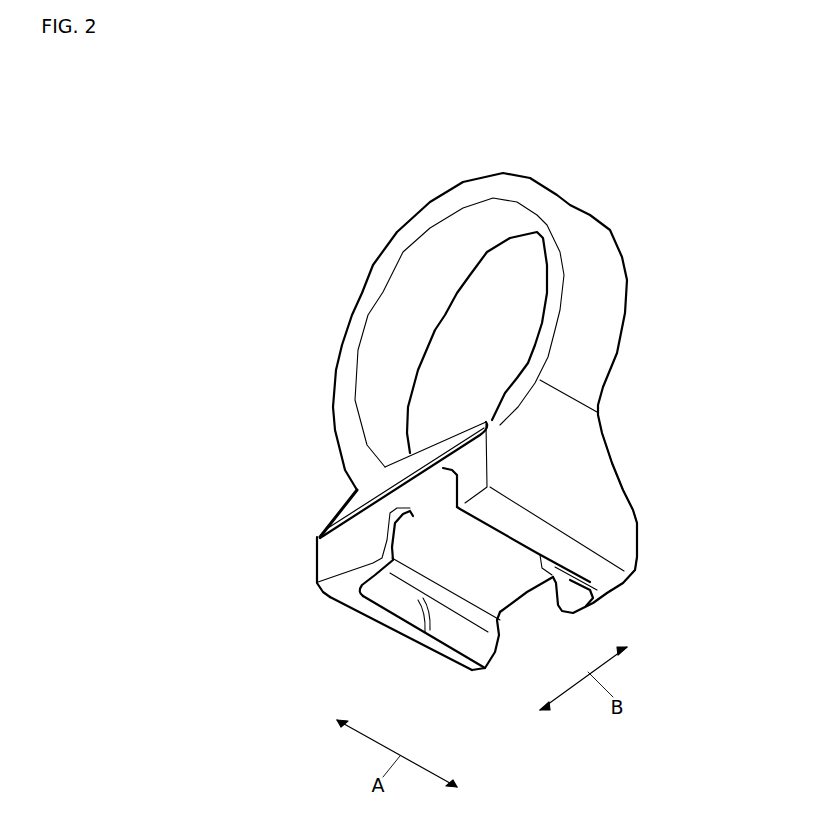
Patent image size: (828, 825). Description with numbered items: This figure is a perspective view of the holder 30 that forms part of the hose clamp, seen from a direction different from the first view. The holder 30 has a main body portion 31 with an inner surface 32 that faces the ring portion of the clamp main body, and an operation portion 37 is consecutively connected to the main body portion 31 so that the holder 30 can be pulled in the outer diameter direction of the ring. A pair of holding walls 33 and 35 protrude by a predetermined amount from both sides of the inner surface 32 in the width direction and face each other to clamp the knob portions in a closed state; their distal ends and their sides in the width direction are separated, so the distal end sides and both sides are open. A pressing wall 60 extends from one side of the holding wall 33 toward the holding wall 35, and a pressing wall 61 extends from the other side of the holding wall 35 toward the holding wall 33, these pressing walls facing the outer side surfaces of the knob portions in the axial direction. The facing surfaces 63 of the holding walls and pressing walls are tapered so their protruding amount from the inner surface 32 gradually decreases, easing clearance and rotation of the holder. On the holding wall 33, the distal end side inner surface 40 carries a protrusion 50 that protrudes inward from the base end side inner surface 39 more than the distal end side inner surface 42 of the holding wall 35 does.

The holder 30 is at (512, 165).
The main body portion 31 is at (350, 490).
The inner surface 32 is at (512, 587).
The holding wall 33 is at (373, 620).
The holding wall 35 is at (605, 530).
The operation portion 37 is at (600, 240).
The base end side inner surface 39 is at (490, 622).
The distal end side inner surface 40 is at (471, 643).
The distal end side inner surface 42 is at (537, 545).
The protrusion 50 is at (405, 598).
The pressing wall 60 is at (340, 538).
The pressing wall 61 is at (581, 592).
The facing surface 63 is at (550, 525).